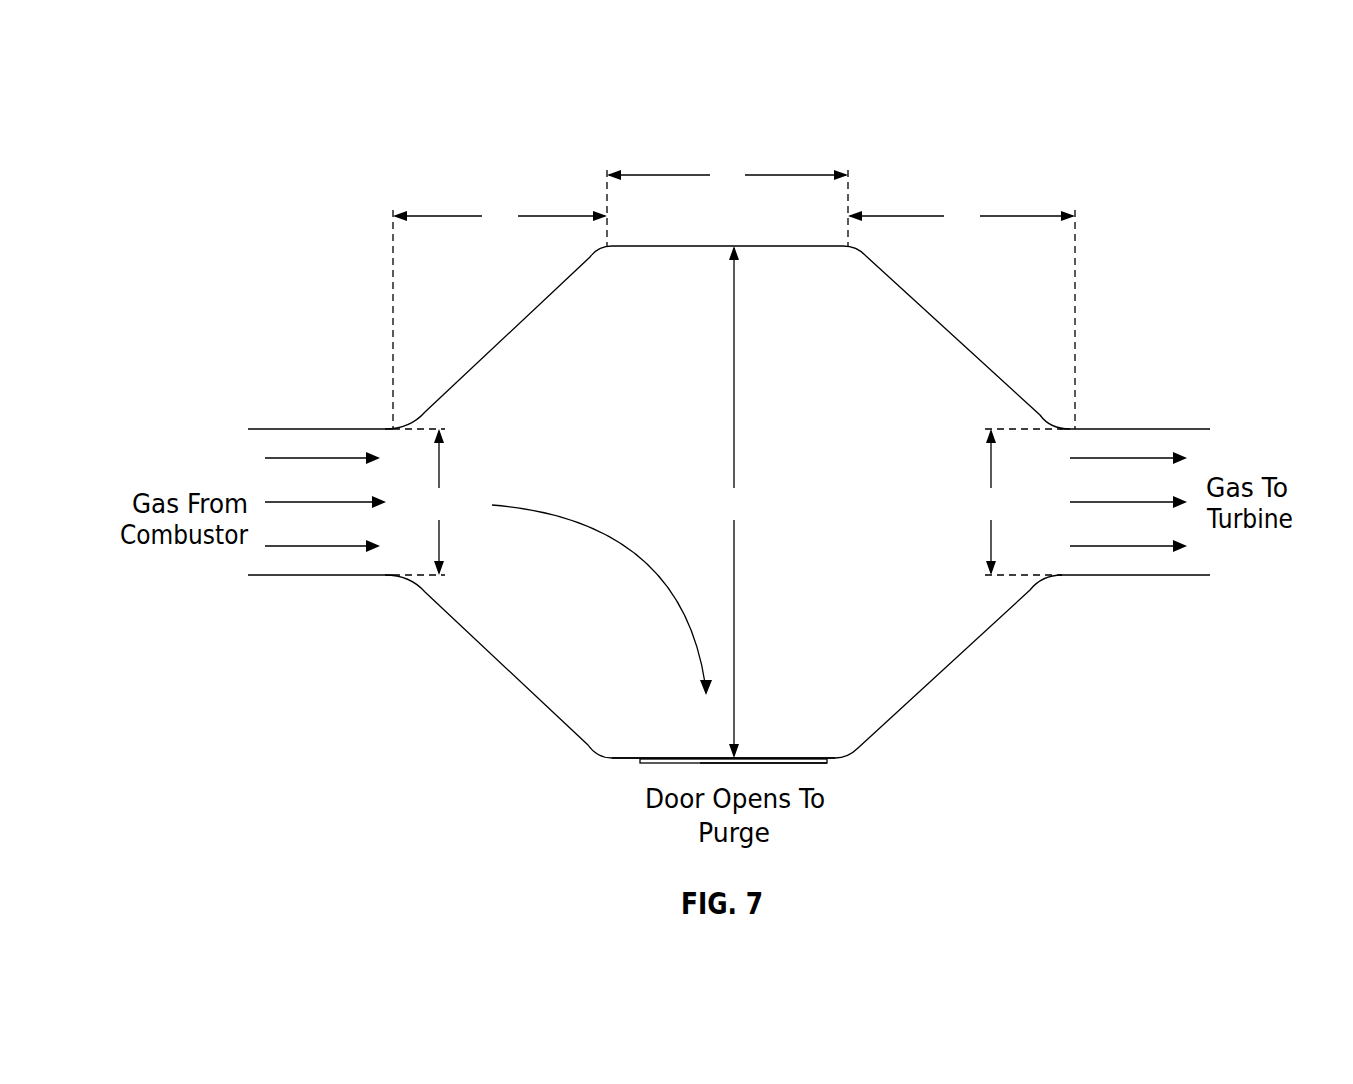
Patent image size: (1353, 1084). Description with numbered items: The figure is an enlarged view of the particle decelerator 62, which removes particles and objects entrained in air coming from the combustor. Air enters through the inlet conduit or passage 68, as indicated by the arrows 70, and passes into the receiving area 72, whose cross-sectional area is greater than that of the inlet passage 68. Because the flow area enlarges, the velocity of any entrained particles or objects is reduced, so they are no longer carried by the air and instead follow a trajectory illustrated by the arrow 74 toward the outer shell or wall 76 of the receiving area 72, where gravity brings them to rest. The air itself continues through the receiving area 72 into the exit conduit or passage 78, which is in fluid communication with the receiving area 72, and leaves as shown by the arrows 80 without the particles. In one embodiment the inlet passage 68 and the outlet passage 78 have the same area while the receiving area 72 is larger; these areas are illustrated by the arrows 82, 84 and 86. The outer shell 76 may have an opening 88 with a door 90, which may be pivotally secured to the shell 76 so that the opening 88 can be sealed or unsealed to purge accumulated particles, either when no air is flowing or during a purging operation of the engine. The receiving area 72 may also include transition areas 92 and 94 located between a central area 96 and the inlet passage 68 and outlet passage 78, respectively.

The particle decelerator 62 is at (1100, 112).
The inlet conduit or passage 68 is at (292, 429).
The arrows 70 is at (278, 548).
The receiving area 72 is at (612, 361).
The arrow 74 is at (620, 545).
The outer shell or wall 76 is at (630, 762).
The exit conduit or passage 78 is at (1160, 577).
The arrows 80 is at (1160, 456).
The arrow 82 is at (423, 502).
The arrow 84 is at (734, 502).
The arrow 86 is at (1020, 502).
The opening 88 is at (832, 762).
The door 90 is at (808, 764).
The transition area 92 is at (500, 314).
The transition area 94 is at (961, 314).
The central area 96 is at (727, 202).